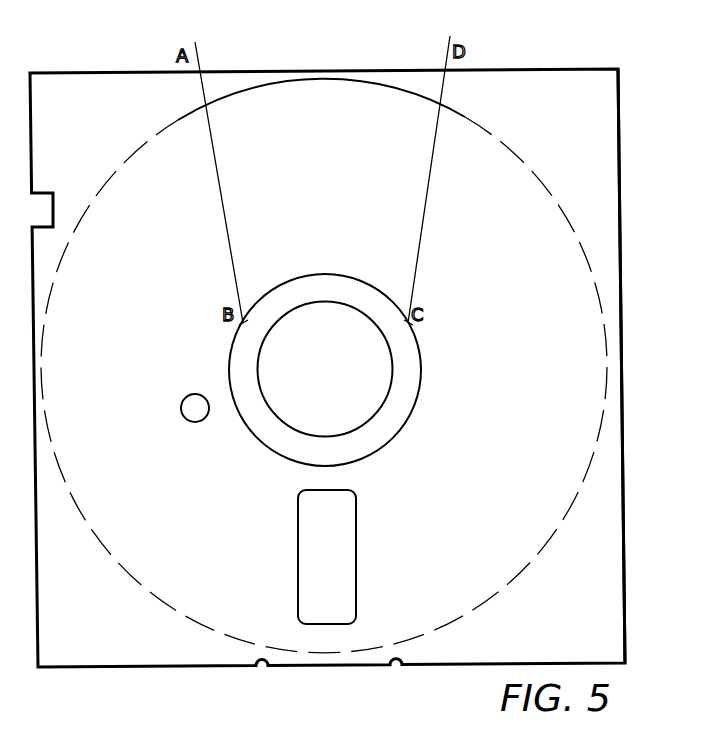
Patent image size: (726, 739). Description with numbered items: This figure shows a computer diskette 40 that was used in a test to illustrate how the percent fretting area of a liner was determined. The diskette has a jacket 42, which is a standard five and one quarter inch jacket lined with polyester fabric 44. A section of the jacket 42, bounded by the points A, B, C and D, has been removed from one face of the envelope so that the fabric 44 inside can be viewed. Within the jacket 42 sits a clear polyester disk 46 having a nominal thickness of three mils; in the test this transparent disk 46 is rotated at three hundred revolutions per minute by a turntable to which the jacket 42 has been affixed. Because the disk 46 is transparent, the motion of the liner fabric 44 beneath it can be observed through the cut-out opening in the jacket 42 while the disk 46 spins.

The computer diskette 40 is at (620, 210).
The jacket 42 is at (625, 570).
The polyester fabric liner 44 is at (496, 163).
The clear polyester disk 46 is at (327, 95).